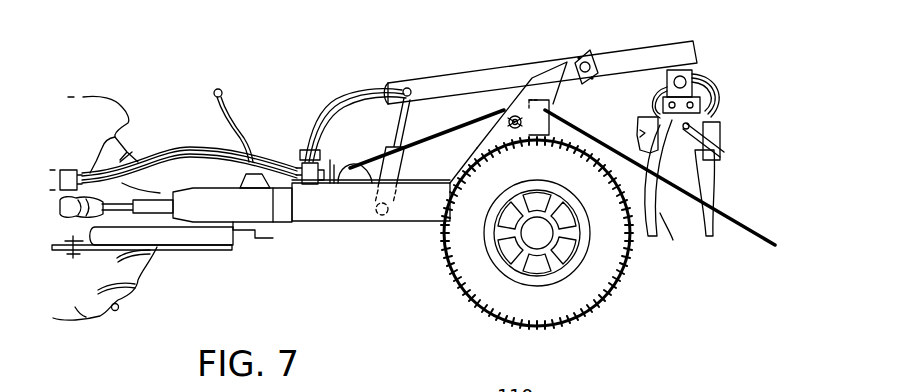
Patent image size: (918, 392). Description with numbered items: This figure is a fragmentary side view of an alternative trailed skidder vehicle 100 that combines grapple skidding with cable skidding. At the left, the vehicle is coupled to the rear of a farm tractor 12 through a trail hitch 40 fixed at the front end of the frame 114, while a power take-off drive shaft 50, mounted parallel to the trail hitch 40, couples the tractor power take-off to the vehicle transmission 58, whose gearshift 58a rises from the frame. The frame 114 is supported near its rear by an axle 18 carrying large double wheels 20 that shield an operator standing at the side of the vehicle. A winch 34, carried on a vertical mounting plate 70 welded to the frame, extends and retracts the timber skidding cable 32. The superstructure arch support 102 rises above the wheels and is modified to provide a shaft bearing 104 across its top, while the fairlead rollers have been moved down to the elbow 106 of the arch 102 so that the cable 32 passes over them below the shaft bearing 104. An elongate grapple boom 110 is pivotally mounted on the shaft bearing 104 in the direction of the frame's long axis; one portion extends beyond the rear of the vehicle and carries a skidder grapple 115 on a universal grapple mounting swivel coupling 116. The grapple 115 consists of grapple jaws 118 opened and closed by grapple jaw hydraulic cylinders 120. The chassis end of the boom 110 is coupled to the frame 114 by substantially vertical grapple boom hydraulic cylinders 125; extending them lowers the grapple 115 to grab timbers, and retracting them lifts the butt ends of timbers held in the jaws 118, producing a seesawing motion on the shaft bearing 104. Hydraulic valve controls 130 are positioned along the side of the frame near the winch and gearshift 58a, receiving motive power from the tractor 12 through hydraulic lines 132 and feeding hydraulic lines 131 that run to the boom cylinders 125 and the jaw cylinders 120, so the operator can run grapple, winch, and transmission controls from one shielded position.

The farm tractor 12 is at (84, 86).
The axle 18 is at (546, 243).
The wheels 20 is at (547, 171).
The timber skidding cable 32 is at (422, 147).
The winch 34 is at (343, 160).
The trail hitch 40 is at (213, 258).
The power take-off drive shaft 50 is at (157, 215).
The transmission 58 is at (238, 182).
The gearshift 58a is at (213, 92).
The vertical mounting plate 70 is at (330, 127).
The trailed skidder vehicle 100 is at (352, 263).
The superstructure arch support 102 is at (558, 60).
The shaft bearing 104 is at (590, 58).
The elbow of the arch 106 is at (540, 74).
The grapple boom 110 is at (440, 78).
The frame 114 is at (348, 226).
The skidder grapple 115 is at (634, 127).
The universal grapple mounting swivel coupling 116 is at (699, 74).
The grapple jaws 118 is at (712, 192).
The grapple jaw hydraulic cylinders 120 is at (722, 130).
The grapple boom hydraulic cylinders 125 is at (398, 168).
The hydraulic valve controls 130 is at (304, 160).
The hydraulic lines 131 is at (333, 106).
The hydraulic lines 132 is at (185, 148).